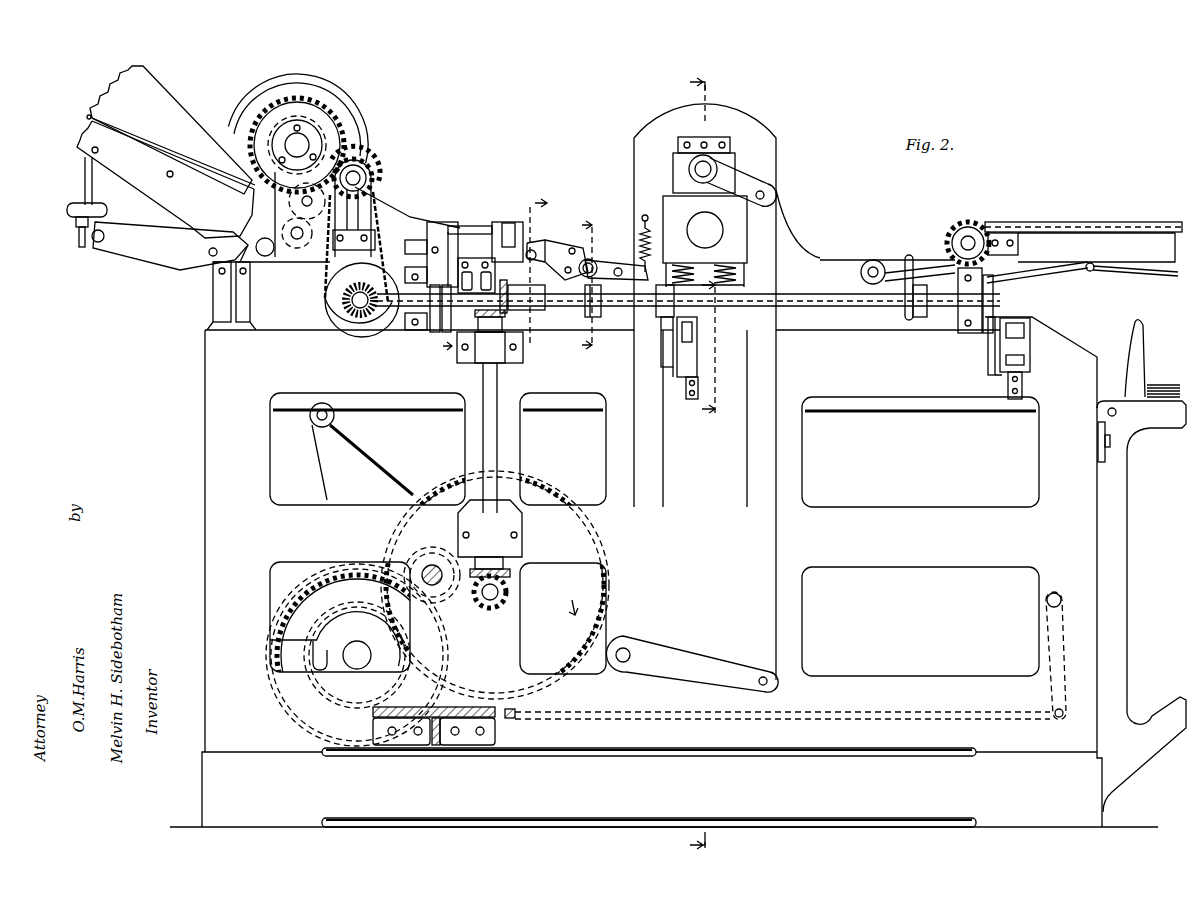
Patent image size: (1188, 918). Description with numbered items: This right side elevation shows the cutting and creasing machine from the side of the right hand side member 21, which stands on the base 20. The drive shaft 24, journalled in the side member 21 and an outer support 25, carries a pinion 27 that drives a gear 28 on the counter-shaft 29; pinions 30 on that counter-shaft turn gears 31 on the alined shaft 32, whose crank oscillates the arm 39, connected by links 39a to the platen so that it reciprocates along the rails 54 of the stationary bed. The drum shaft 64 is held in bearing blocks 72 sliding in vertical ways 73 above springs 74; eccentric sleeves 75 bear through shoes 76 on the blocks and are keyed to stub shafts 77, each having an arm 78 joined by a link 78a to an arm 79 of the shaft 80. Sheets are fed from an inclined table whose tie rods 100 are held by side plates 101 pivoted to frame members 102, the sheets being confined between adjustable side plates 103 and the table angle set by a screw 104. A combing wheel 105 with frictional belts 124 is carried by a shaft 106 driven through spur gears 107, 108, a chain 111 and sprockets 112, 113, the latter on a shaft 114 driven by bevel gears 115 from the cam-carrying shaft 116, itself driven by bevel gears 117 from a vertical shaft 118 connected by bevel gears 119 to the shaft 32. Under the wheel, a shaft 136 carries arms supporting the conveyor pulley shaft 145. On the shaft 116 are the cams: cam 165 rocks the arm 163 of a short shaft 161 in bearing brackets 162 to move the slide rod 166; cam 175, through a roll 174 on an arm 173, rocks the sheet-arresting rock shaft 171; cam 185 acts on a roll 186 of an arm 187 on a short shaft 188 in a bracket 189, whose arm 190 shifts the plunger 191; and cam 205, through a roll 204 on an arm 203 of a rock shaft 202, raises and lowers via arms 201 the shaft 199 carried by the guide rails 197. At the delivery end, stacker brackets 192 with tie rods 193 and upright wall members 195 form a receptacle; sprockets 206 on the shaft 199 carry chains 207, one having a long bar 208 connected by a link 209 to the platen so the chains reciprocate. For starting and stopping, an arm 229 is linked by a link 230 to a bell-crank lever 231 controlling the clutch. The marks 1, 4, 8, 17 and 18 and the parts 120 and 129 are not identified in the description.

The main shaft 1 is at (688, 298).
The section line 4 is at (688, 464).
The section line 8 is at (701, 347).
The section line 17 is at (484, 272).
The section line 18 is at (577, 283).
The base 20 is at (461, 822).
The right hand side member 21 is at (205, 578).
The shaft 24 is at (438, 585).
The outer support 25 is at (373, 712).
The pinion 27 is at (405, 563).
The gear 28 is at (322, 572).
The counter-shaft 29 is at (350, 666).
The pinions 30 is at (290, 648).
The gears 31 is at (604, 629).
The shaft 32 is at (508, 600).
The arm 39 is at (375, 462).
The links 39a is at (312, 440).
The rails 54 is at (452, 413).
The drum shaft 64 is at (709, 236).
The bearing blocks 72 is at (705, 305).
The vertical ways 73 is at (745, 270).
The springs 74 is at (745, 283).
The eccentric sleeves 75 is at (683, 172).
The shoes 76 is at (673, 178).
The stub shafts 77 is at (712, 165).
The arm 78 is at (768, 187).
The link 78a is at (777, 372).
The arm 79 is at (706, 662).
The shaft 80 is at (624, 664).
The tie rods 100 is at (172, 172).
The side plates 101 is at (128, 172).
The frame members 102 is at (405, 212).
The side plates 103 is at (180, 113).
The screw 104 is at (68, 210).
The combing wheel 105 is at (360, 116).
The shaft 106 is at (300, 147).
The spur gear 107 is at (318, 104).
The spur gear 108 is at (372, 166).
The chain 111 is at (428, 244).
The sprocket 112 is at (372, 190).
The sprocket 113 is at (345, 325).
The shaft 114 is at (362, 316).
The bevel gears 115 is at (380, 318).
The cam-carrying shaft 116 is at (620, 312).
The bevel gears 117 is at (368, 183).
The vertical shaft 118 is at (498, 455).
The bevel gears 119 is at (362, 201).
The block 120 is at (476, 265).
The endless belts 124 is at (345, 157).
The bracket 129 is at (212, 255).
The shaft 136 is at (265, 257).
The shaft 145 is at (296, 248).
The short shaft 161 is at (483, 226).
The bearing brackets 162 is at (500, 230).
The arm 163 is at (447, 235).
The cam 165 is at (445, 267).
The transverse slide rod 166 is at (505, 282).
The rock shaft 171 is at (624, 262).
The arm 173 is at (606, 263).
The roll 174 is at (576, 243).
The cam 175 is at (588, 312).
The cam 185 is at (665, 308).
The roll 186 is at (664, 338).
The arm 187 is at (664, 364).
The short shaft 188 is at (700, 361).
The bracket 189 is at (688, 402).
The arm 190 is at (699, 346).
The plunger 191 is at (700, 323).
The brackets 192 is at (1128, 518).
The tie rods 193 is at (1118, 412).
The upright wall members 195 is at (1147, 340).
The guide rails 197 is at (1118, 240).
The shaft 199 is at (966, 233).
The arms 201 is at (926, 258).
The rock shaft 202 is at (873, 260).
The arm 203 is at (903, 258).
The roll 204 is at (906, 256).
The cam 205 is at (915, 318).
The sprockets 206 is at (994, 224).
The chains 207 is at (1077, 224).
The long link or bar 208 is at (1133, 277).
The link 209 is at (1068, 274).
The arm 229 is at (1050, 657).
The link 230 is at (966, 712).
The bell-crank lever 231 is at (515, 712).